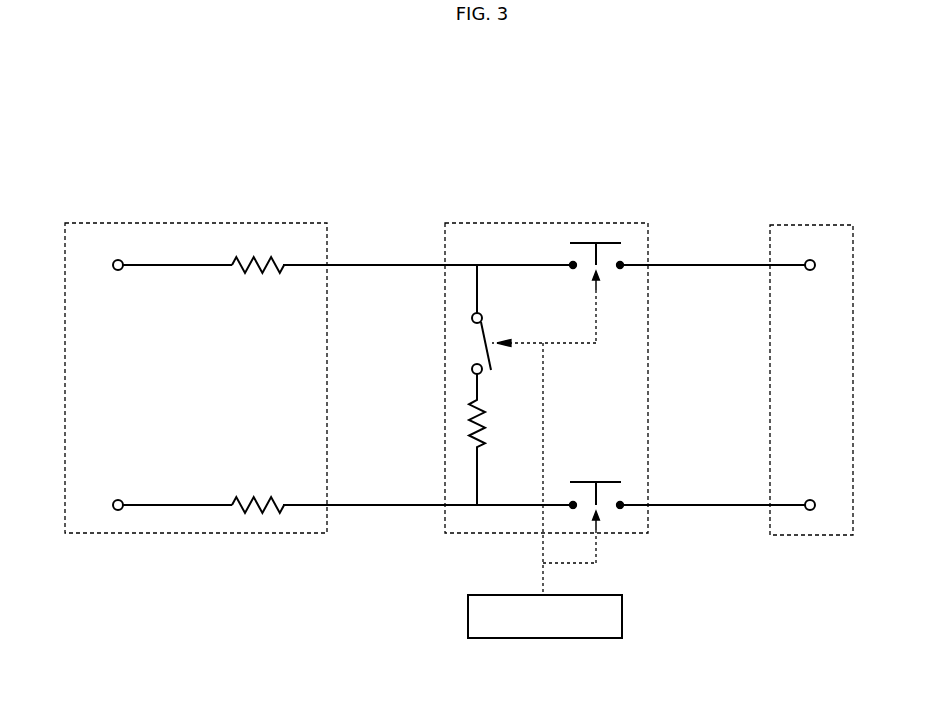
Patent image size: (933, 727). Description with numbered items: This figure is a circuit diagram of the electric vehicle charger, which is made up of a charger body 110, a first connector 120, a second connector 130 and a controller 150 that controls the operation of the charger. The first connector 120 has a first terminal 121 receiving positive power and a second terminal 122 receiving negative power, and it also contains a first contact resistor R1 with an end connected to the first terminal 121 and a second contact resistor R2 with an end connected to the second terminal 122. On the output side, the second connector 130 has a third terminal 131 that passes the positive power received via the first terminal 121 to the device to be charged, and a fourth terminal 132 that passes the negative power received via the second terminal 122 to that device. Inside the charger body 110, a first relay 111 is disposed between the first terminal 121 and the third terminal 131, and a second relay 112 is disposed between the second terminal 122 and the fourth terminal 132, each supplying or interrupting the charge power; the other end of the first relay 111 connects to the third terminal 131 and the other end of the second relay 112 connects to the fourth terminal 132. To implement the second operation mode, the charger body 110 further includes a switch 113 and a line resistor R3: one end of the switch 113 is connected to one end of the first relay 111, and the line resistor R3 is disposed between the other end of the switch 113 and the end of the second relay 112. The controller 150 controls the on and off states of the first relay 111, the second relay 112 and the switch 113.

The charger body 110 is at (515, 223).
The first relay 111 is at (590, 243).
The second relay 112 is at (590, 482).
The switch 113 is at (487, 343).
The first connector 120 is at (196, 368).
The first terminal 121 is at (118, 259).
The second terminal 122 is at (118, 511).
The second connector 130 is at (815, 225).
The third terminal 131 is at (815, 265).
The fourth terminal 132 is at (815, 505).
The controller 150 is at (553, 638).
The first contact resistor R1 is at (258, 280).
The second contact resistor R2 is at (258, 491).
The line resistor R3 is at (494, 439).